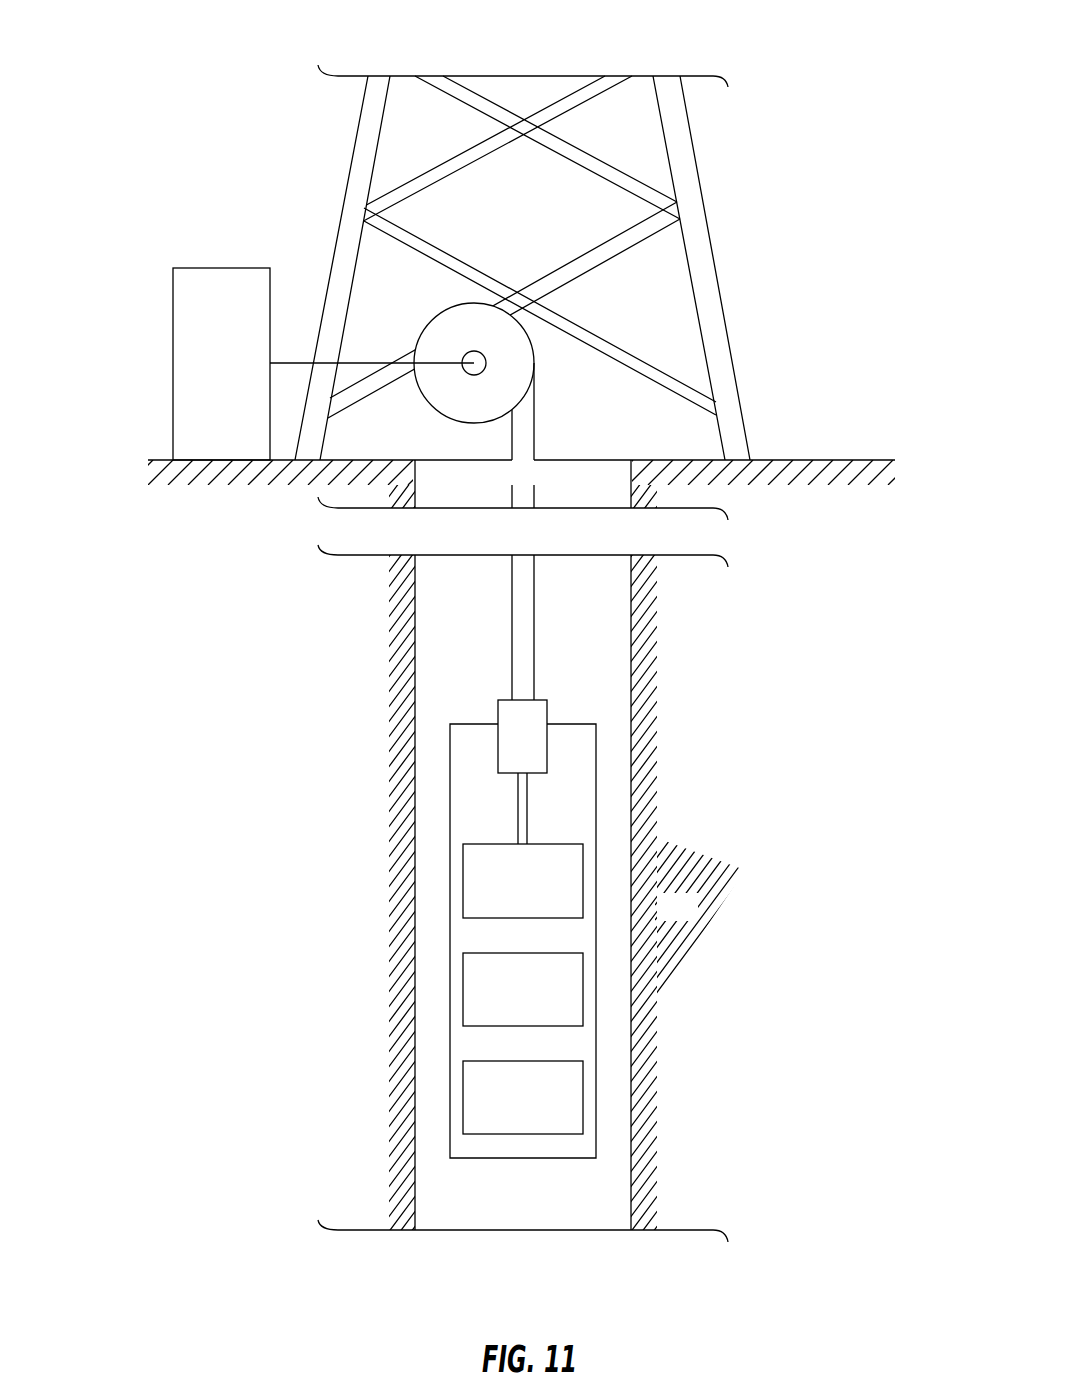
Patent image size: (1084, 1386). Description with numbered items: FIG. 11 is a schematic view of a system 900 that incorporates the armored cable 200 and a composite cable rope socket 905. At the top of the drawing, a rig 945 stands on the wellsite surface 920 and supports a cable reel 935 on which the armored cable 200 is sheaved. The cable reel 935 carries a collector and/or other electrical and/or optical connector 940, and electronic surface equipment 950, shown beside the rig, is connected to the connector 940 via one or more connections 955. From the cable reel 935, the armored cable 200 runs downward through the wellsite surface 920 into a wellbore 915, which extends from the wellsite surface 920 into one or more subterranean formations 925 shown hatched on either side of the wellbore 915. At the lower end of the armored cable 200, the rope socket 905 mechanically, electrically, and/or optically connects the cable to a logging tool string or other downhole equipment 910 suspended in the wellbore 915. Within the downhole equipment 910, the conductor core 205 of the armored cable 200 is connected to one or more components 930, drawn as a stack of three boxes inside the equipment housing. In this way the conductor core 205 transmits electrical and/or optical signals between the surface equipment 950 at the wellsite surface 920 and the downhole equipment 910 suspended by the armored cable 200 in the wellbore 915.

The system 900 is at (170, 71).
The rig 945 is at (732, 208).
The electronic surface equipment 950 is at (242, 372).
The connections 955 is at (367, 362).
The cable reel 935 is at (535, 363).
The connector 940 is at (474, 375).
The wellsite surface 920 is at (837, 460).
The wellbore 915 is at (555, 1203).
The subterranean formations 925 is at (695, 919).
The armored cable 200 is at (534, 628).
The downhole equipment 910 is at (583, 724).
The composite cable rope socket 905 is at (522, 720).
The conductor core 205 is at (527, 827).
The components 930 is at (542, 895).